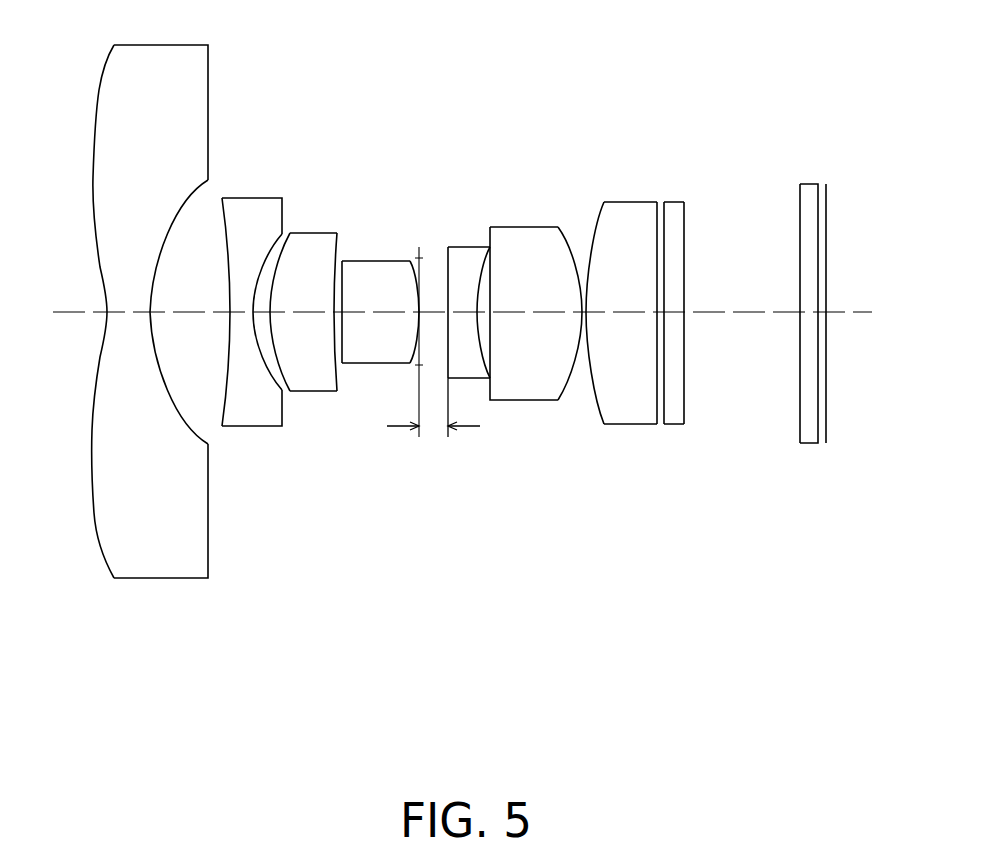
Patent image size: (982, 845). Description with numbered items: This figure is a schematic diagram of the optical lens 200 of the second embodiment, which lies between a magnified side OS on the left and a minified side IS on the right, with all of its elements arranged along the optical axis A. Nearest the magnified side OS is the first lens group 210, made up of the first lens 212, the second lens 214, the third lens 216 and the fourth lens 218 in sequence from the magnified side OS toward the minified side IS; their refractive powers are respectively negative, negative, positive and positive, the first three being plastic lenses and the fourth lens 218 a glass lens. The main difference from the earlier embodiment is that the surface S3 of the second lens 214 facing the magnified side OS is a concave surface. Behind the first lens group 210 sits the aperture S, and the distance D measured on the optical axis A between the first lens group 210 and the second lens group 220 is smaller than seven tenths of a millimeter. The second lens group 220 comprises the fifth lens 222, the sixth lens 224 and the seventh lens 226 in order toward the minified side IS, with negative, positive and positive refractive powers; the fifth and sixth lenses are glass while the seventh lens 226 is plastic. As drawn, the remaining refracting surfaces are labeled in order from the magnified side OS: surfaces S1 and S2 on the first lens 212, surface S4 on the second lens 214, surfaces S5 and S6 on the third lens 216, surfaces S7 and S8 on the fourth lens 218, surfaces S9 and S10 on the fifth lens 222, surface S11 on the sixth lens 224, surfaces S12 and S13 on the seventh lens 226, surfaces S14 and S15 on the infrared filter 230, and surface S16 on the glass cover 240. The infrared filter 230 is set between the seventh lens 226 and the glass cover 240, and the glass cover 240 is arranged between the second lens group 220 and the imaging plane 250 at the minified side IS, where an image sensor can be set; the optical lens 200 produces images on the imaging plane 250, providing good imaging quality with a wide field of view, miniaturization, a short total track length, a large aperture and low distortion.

The optical lens 200 is at (742, 720).
The first lens group 210 is at (407, 645).
The first lens 212 is at (166, 328).
The second lens 214 is at (265, 378).
The third lens 216 is at (332, 393).
The fourth lens 218 is at (381, 423).
The second lens group 220 is at (647, 510).
The fifth lens 222 is at (465, 340).
The sixth lens 224 is at (536, 343).
The seventh lens 226 is at (645, 331).
The infrared filter 230 is at (687, 315).
The glass cover 240 is at (796, 318).
The imaging plane 250 is at (828, 418).
The object-side surface of first lens S1 is at (98, 92).
The image-side surface of first lens S2 is at (173, 222).
The surface of the second lens facing the magnified side S3 is at (222, 212).
The image-side surface of second lens S4 is at (272, 248).
The object-side surface of third lens S5 is at (275, 262).
The image-side surface of third lens S6 is at (333, 298).
The object-side surface of fourth lens S7 is at (342, 281).
The image-side surface of fourth lens S8 is at (417, 289).
The object-side surface of fifth lens S9 is at (445, 285).
The image-side surface of fifth lens S10 is at (481, 271).
The image-side surface of sixth lens S11 is at (569, 247).
The object-side surface of seventh lens S12 is at (596, 224).
The image-side surface of seventh lens S13 is at (657, 242).
The object-side surface of filter S14 is at (661, 220).
The image-side surface of filter S15 is at (686, 262).
The object-side surface of cover glass S16 is at (800, 207).
The aperture S is at (421, 367).
The distance D is at (433, 421).
The optical axis A is at (74, 316).
The magnified side OS is at (50, 292).
The minified side IS is at (877, 296).